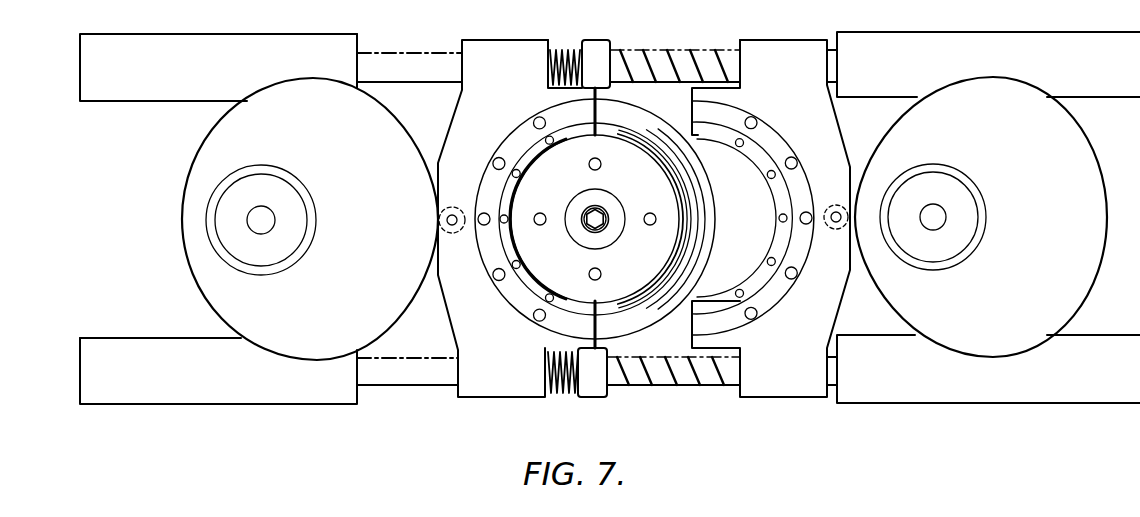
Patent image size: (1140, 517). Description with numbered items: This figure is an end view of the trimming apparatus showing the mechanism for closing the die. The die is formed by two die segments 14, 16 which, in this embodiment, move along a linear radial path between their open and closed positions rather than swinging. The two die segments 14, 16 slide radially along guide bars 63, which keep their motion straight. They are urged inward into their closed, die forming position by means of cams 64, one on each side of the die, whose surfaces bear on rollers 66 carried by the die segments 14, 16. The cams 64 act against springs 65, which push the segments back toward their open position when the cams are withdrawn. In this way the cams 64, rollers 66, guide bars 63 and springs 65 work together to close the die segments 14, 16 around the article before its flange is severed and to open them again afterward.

The die segment 14 is at (517, 297).
The die segment 16 is at (767, 298).
The guide bar 63 is at (683, 375).
The cam 64 is at (222, 283).
The spring 65 is at (643, 376).
The roller 66 is at (431, 200).